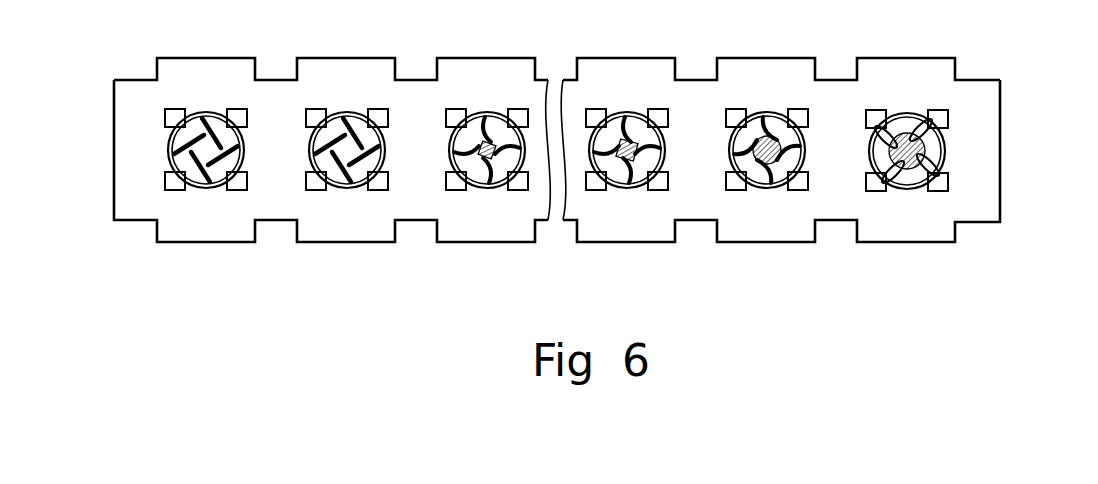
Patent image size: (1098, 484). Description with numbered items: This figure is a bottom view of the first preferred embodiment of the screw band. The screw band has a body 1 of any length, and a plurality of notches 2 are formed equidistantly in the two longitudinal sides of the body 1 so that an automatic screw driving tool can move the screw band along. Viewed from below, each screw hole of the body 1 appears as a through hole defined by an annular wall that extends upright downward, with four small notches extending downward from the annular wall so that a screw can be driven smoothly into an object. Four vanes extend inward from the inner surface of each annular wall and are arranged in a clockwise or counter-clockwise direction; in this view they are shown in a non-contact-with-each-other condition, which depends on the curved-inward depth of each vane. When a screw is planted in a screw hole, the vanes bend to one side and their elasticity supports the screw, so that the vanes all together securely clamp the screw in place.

The body 1 is at (1003, 190).
The notches 2 is at (273, 76).